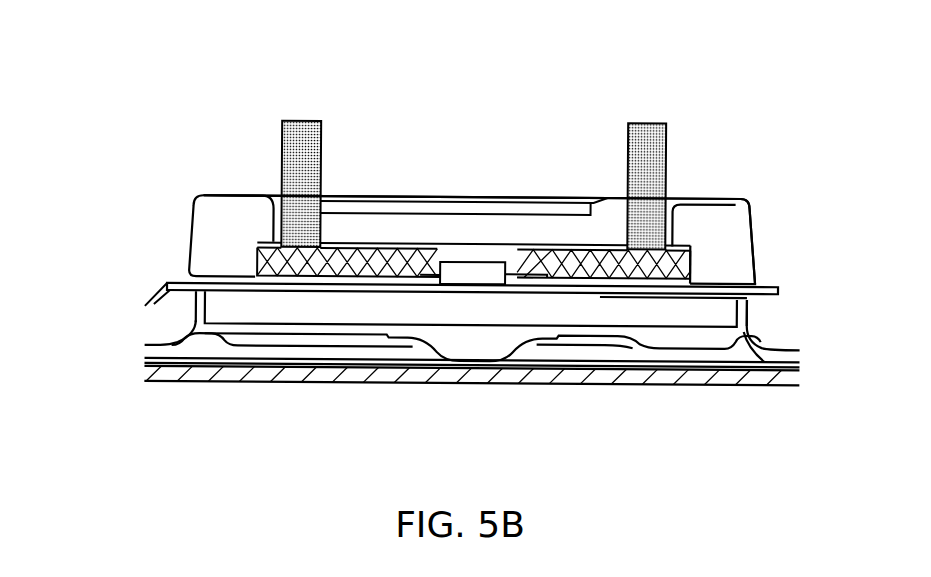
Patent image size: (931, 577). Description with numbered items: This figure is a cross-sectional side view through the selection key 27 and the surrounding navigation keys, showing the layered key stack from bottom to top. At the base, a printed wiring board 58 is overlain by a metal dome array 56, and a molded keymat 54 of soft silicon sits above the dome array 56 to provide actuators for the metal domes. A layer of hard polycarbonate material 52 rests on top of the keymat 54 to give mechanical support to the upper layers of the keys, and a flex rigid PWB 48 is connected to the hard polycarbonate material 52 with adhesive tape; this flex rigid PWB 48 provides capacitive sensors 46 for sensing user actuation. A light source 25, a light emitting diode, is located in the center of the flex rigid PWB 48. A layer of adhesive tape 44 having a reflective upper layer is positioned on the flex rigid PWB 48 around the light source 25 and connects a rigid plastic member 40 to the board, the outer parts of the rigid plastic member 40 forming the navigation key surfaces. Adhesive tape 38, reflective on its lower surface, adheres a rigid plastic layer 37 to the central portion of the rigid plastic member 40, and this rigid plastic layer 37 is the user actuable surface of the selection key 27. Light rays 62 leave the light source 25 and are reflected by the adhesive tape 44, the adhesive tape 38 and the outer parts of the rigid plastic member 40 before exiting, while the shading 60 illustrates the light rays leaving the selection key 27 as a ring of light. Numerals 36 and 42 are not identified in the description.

The selection key 27 is at (588, 84).
The light source 25 is at (460, 259).
The light guide body 36 is at (377, 217).
The rigid plastic layer 37 is at (437, 199).
The adhesive tape 38 is at (565, 240).
The rigid plastic member 40 is at (266, 268).
The cover 42 is at (752, 210).
The adhesive tape 44 is at (333, 272).
The capacitive sensors 46 is at (210, 277).
The flex rigid PWB 48 is at (190, 291).
The hard polycarbonate material 52 is at (728, 311).
The keymat 54 is at (772, 340).
The dome array 56 is at (277, 360).
The printed wiring board 58 is at (167, 382).
The shading 60 is at (321, 140).
The light rays 62 is at (197, 207).